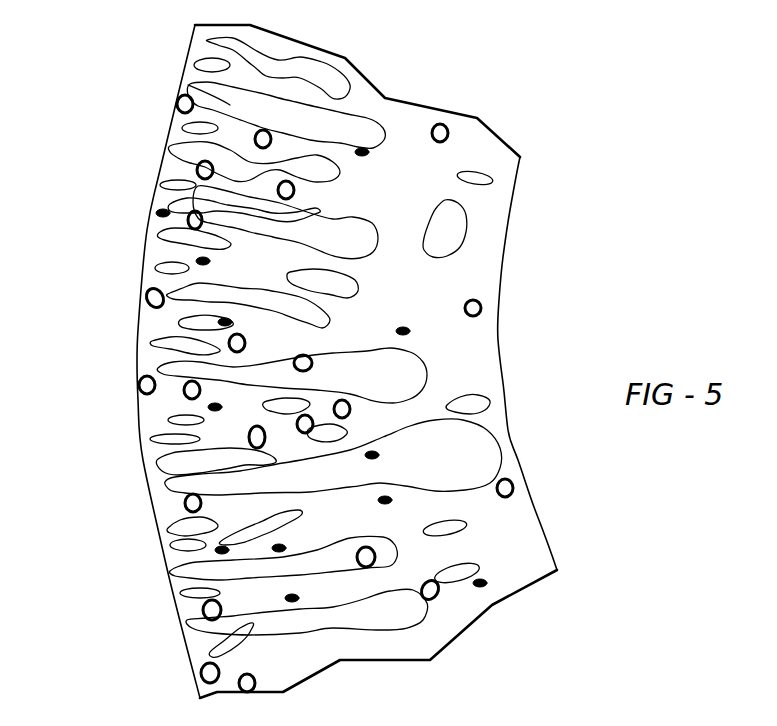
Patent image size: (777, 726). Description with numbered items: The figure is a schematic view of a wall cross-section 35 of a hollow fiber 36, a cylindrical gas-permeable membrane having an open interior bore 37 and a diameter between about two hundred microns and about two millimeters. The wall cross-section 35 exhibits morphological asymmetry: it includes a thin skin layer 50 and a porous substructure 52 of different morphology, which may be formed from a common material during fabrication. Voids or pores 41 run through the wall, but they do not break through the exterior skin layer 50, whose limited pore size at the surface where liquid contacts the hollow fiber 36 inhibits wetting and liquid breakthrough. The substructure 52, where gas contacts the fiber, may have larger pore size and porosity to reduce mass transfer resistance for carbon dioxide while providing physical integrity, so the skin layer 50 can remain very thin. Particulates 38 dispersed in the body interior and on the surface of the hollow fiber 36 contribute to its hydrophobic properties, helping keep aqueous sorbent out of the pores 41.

The wall cross-section 35 is at (495, 100).
The hollow fiber 36 is at (95, 150).
The open interior bore 37 is at (510, 208).
The particulate 38 is at (163, 213).
The pores 41 is at (227, 47).
The skin layer 50 is at (147, 330).
The substructure 52 is at (460, 280).